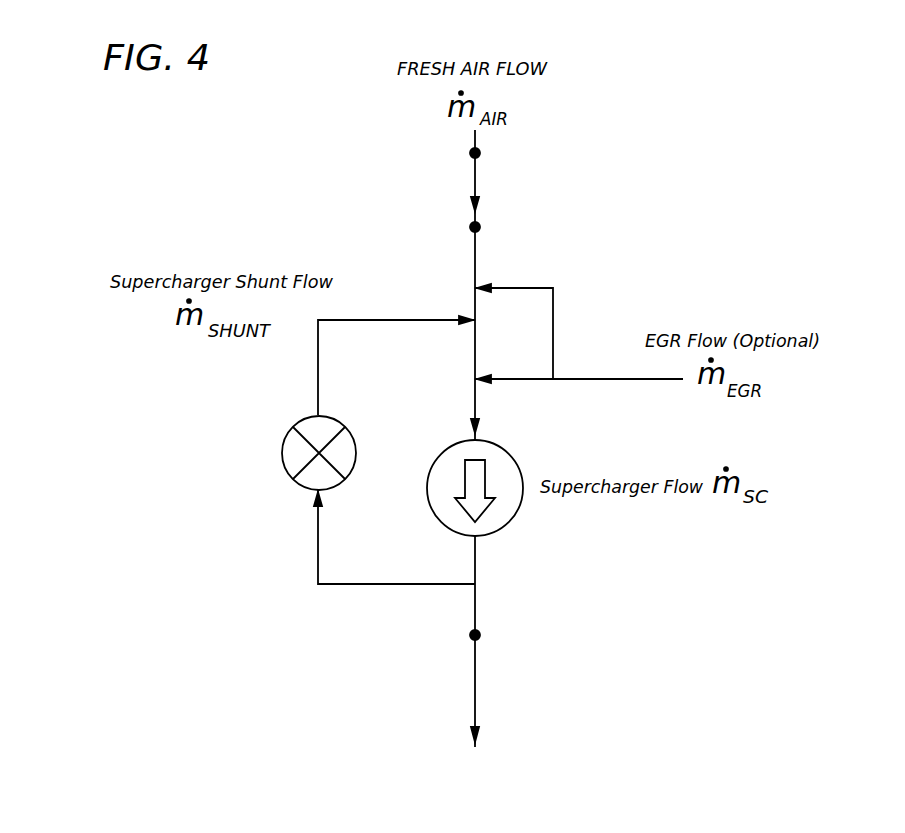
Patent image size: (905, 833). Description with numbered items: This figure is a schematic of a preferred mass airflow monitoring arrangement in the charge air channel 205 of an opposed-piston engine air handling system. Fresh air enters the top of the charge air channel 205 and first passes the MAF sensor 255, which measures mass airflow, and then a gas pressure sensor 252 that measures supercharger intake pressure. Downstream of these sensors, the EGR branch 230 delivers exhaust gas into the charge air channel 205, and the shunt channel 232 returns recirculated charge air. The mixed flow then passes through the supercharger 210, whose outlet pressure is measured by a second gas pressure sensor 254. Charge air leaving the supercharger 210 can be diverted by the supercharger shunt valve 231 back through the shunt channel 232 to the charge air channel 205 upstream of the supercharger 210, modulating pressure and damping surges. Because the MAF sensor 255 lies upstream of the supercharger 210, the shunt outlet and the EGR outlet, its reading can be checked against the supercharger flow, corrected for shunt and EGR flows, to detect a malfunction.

The charge air channel 205 is at (416, 222).
The MAF sensor 255 is at (472, 153).
The gas pressure sensor 252 is at (478, 226).
The EGR branch 230 is at (627, 379).
The supercharger shunt valve 231 is at (283, 444).
The shunt channel 232 is at (377, 584).
The supercharger 210 is at (500, 525).
The gas pressure sensor 254 is at (480, 635).